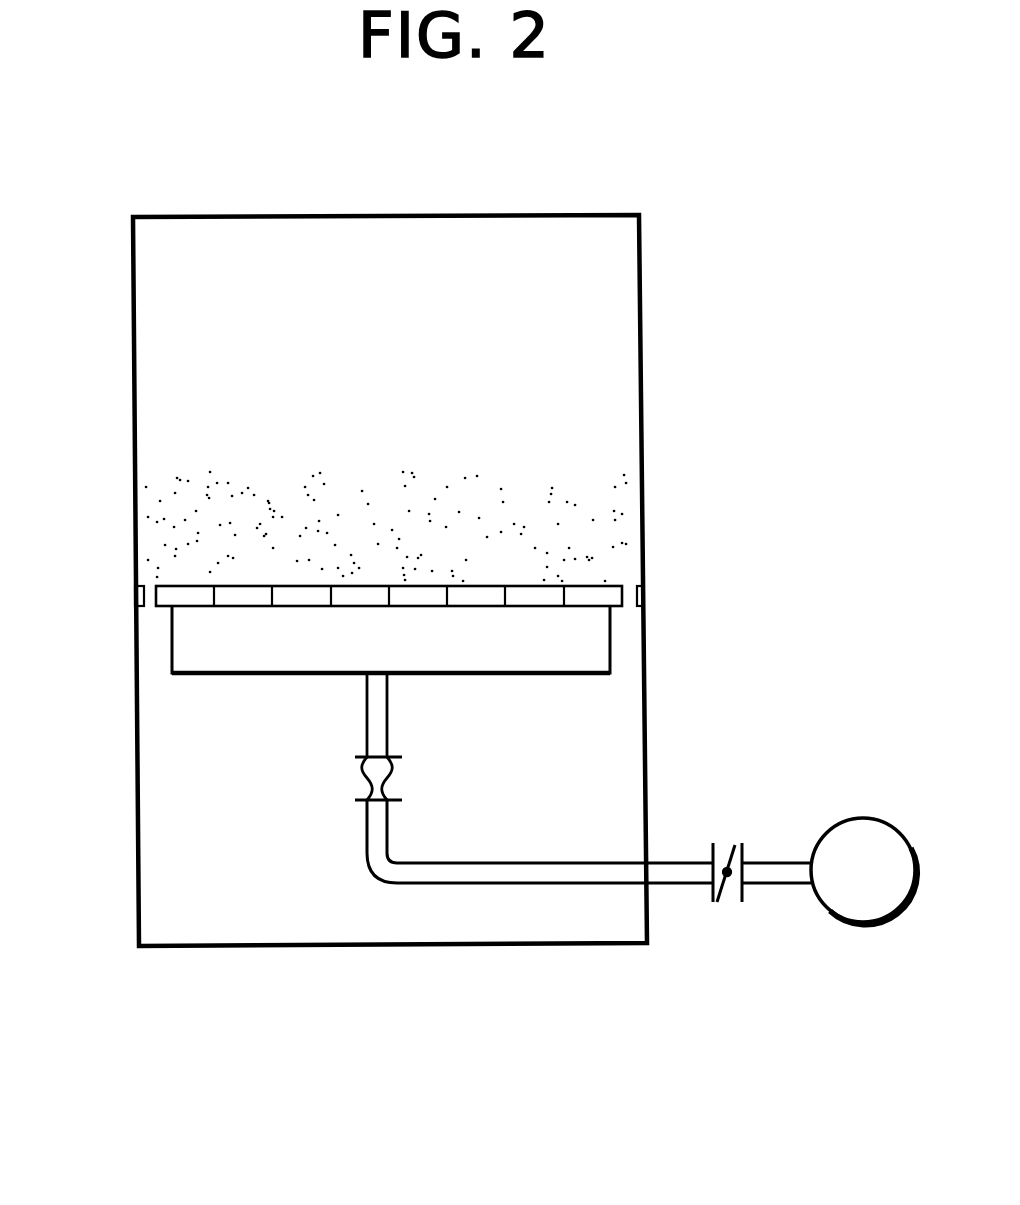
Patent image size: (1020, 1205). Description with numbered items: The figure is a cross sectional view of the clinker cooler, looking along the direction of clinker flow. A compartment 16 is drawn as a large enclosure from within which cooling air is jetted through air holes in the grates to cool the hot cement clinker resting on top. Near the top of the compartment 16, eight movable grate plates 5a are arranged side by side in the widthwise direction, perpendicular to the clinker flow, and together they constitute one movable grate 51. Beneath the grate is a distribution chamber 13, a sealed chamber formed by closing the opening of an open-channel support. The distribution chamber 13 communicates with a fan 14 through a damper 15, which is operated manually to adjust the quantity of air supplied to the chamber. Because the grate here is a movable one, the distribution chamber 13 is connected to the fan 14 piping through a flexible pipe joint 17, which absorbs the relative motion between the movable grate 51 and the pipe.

The compartment 16 is at (252, 902).
The movable grate 51 is at (470, 582).
The movable grate plate 5a is at (600, 582).
The distribution chamber 13 is at (622, 630).
The flexible pipe joint 17 is at (360, 768).
The damper 15 is at (725, 847).
The fan 14 is at (860, 817).